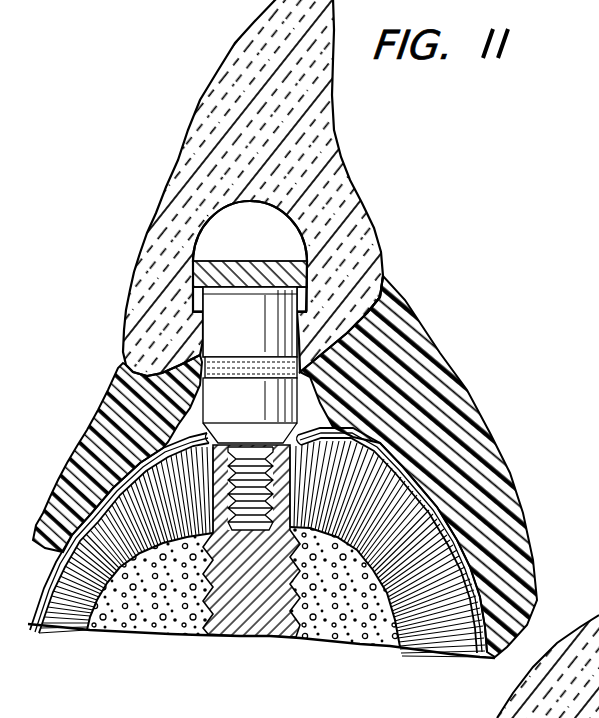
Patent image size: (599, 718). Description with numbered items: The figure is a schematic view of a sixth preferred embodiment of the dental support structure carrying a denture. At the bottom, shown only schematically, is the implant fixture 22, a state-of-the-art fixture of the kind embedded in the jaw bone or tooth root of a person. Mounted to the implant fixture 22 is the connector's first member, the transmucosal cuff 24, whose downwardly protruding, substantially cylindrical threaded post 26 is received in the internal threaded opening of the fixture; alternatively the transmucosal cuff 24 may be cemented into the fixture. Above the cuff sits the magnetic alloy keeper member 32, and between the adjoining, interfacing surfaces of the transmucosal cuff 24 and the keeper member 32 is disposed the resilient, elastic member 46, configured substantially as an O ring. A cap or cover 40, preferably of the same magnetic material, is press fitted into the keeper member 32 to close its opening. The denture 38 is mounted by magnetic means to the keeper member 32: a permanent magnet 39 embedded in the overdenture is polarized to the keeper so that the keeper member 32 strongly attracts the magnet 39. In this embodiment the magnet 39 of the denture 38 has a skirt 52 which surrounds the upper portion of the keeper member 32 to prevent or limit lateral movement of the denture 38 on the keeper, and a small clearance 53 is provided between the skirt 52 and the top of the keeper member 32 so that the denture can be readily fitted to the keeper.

The implant fixture 22 is at (250, 590).
The transmucosal cuff 24 is at (213, 407).
The threaded post 26 is at (213, 494).
The keeper member 32 is at (224, 317).
The denture 38 is at (350, 182).
The permanent magnet 39 is at (248, 262).
The cap or cover 40 is at (292, 269).
The resilient, elastic member 46 is at (300, 366).
The skirt 52 is at (303, 328).
The clearance 53 is at (377, 300).